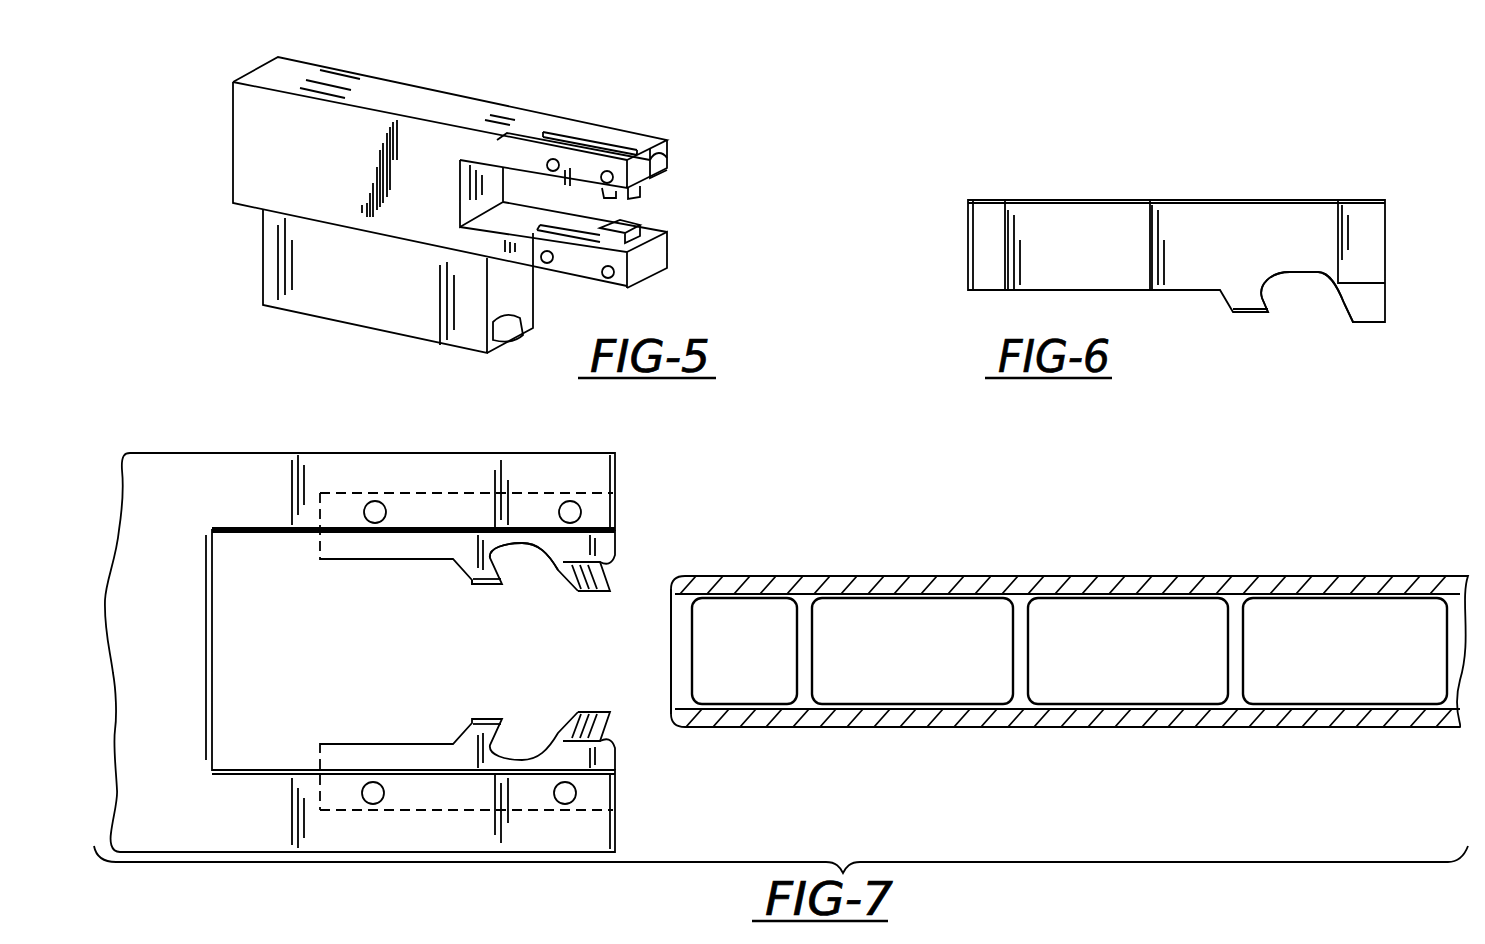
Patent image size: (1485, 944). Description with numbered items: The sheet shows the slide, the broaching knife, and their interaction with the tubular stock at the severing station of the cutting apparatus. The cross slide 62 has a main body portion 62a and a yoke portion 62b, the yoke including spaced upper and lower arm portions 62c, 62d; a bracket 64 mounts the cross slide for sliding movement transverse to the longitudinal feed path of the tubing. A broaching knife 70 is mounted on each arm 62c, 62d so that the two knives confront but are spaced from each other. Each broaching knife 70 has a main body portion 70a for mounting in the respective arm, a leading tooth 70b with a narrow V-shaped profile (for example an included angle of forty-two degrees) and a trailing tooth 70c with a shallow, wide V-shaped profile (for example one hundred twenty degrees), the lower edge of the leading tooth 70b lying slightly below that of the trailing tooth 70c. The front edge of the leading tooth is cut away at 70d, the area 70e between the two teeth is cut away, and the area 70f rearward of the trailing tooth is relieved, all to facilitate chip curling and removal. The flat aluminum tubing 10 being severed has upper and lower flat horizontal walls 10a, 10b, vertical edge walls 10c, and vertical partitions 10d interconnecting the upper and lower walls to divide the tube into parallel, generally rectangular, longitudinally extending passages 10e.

In FIG. 7, the flat aluminum tubing 10 is at (1165, 568).
In FIG. 7, the upper flat horizontal wall 10a is at (956, 577).
In FIG. 7, the lower flat horizontal wall 10b is at (1110, 718).
In FIG. 7, the vertical edge wall 10c is at (671, 640).
In FIG. 7, the vertical partition 10d is at (1034, 653).
In FIG. 7, the core or passage 10e is at (1298, 636).
In FIG. 5, the cross slide 62 is at (486, 95).
In FIG. 5, the main body portion 62a is at (258, 134).
In FIG. 5, the yoke portion 62b is at (638, 132).
In FIG. 7, the yoke portion 62b is at (349, 452).
In FIG. 5, the upper arm portion 62c is at (652, 177).
In FIG. 7, the upper arm portion 62c is at (622, 470).
In FIG. 5, the lower arm portion 62d is at (650, 262).
In FIG. 7, the lower arm portion 62d is at (620, 792).
In FIG. 5, the bracket 64 is at (383, 297).
In FIG. 6, the broaching knife 70 is at (1022, 200).
In FIG. 7, the broaching knife 70 is at (455, 562).
In FIG. 6, the main body portion 70a is at (1168, 208).
In FIG. 6, the leading tooth 70b is at (1362, 330).
In FIG. 7, the leading tooth 70b is at (615, 565).
In FIG. 6, the trailing tooth 70c is at (1263, 326).
In FIG. 7, the trailing tooth 70c is at (472, 585).
In FIG. 6, the cut-away leading edge 70d is at (1385, 302).
In FIG. 6, the cut-away area 70e is at (1298, 276).
In FIG. 7, the cut-away area 70e is at (536, 553).
In FIG. 6, the relieved area 70f is at (1224, 300).